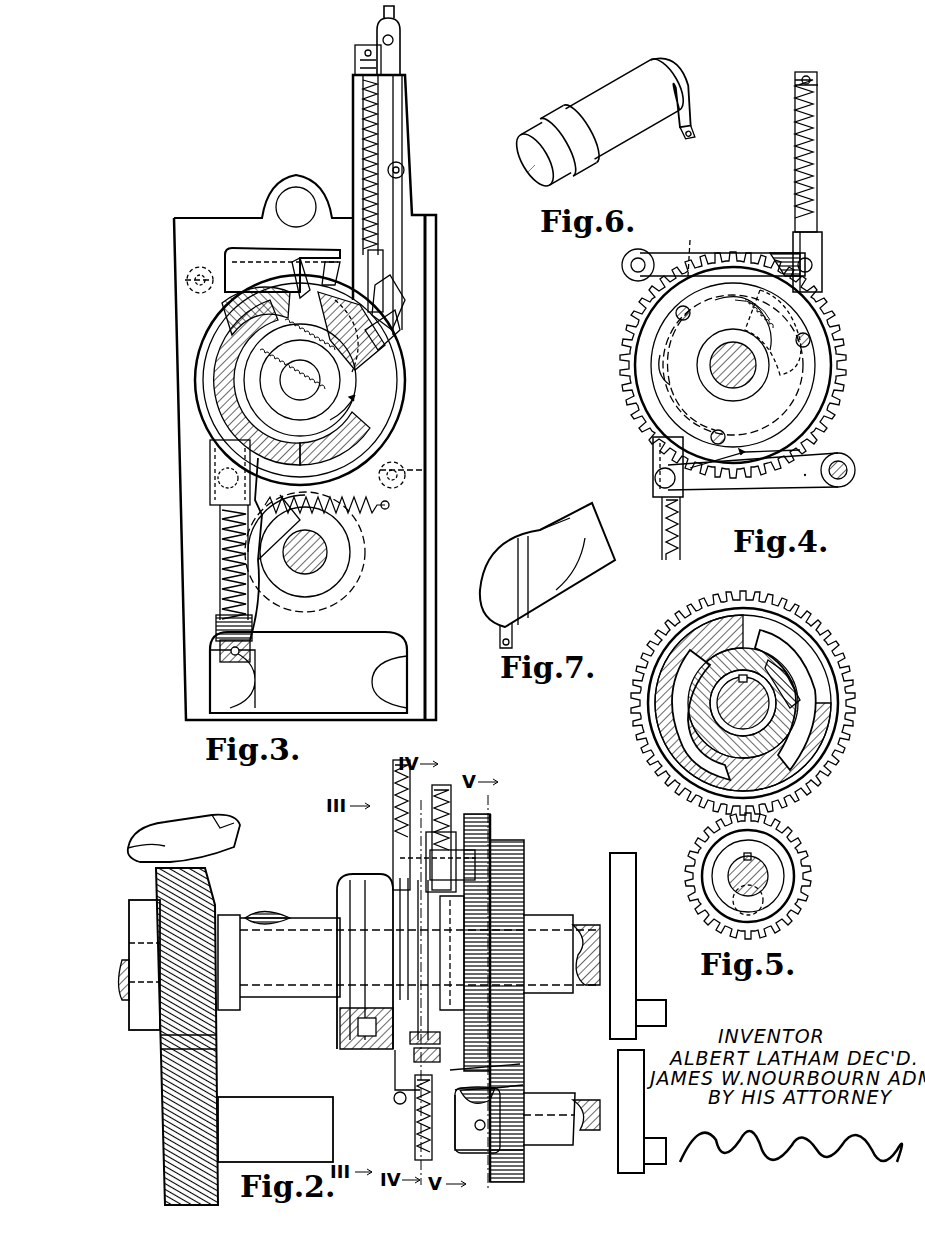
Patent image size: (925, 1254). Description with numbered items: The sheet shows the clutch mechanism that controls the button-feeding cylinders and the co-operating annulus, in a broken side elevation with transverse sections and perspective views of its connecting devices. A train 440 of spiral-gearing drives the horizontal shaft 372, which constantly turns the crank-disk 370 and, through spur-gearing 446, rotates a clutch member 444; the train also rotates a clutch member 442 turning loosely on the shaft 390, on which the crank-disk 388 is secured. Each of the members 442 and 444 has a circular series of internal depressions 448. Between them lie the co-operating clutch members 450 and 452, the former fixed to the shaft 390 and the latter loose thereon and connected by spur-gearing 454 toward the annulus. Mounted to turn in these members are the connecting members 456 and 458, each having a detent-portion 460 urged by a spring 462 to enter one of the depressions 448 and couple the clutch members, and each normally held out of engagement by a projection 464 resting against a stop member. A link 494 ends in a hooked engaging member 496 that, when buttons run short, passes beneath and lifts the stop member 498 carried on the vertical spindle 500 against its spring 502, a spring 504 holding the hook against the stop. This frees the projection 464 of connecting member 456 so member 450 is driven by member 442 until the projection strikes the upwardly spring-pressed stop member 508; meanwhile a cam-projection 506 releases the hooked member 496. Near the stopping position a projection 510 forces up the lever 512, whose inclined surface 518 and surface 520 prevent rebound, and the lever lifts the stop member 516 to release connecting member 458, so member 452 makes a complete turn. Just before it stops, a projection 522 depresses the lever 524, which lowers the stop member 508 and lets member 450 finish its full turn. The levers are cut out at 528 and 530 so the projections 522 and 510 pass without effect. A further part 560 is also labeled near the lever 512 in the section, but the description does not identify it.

In FIG. 2, the crank-disk 370 is at (644, 1102).
In FIG. 3, the horizontal shaft 372 is at (335, 560).
In FIG. 5, the horizontal shaft 372 is at (766, 876).
In FIG. 2, the horizontal shaft 372 is at (545, 1148).
In FIG. 2, the crank-disk 388 is at (636, 900).
In FIG. 5, the shaft 390 is at (700, 725).
In FIG. 2, the shaft 390 is at (580, 920).
In FIG. 2, the train of spiral-gearing 440 is at (218, 1040).
In FIG. 3, the clutch member 442 is at (235, 408).
In FIG. 2, the clutch member 442 is at (337, 890).
In FIG. 5, the clutch member 444 is at (810, 778).
In FIG. 2, the clutch member 444 is at (505, 1000).
In FIG. 5, the spur-gearing 446 is at (775, 818).
In FIG. 2, the spur-gearing 446 is at (523, 1072).
In FIG. 4, the internal depressions 448 is at (665, 362).
In FIG. 5, the internal depressions 448 is at (662, 655).
In FIG. 2, the internal depressions 448 is at (360, 1032).
In FIG. 2, the clutch member 450 is at (370, 1000).
In FIG. 4, the clutch member 452 is at (808, 395).
In FIG. 5, the clutch member 452 is at (790, 740).
In FIG. 2, the clutch member 452 is at (505, 915).
In FIG. 4, the spur-gearing 454 is at (625, 398).
In FIG. 2, the spur-gearing 454 is at (492, 812).
In FIG. 3, the connecting member 456 is at (380, 345).
In FIG. 6, the connecting member 456 is at (600, 98).
In FIG. 4, the connecting member 456 is at (800, 325).
In FIG. 2, the connecting member 456 is at (400, 898).
In FIG. 3, the connecting member 458 is at (330, 262).
In FIG. 7, the connecting member 458 is at (538, 530).
In FIG. 2, the connecting member 458 is at (523, 868).
In FIG. 6, the detent-portion 460 is at (528, 172).
In FIG. 7, the detent-portion 460 is at (605, 532).
In FIG. 5, the detent-portion 460 is at (785, 690).
In FIG. 3, the spring 462 is at (250, 345).
In FIG. 4, the spring 462 is at (720, 305).
In FIG. 3, the projection 464 is at (395, 292).
In FIG. 6, the projection 464 is at (688, 80).
In FIG. 4, the projection 464 is at (810, 278).
In FIG. 7, the projection 464 is at (500, 545).
In FIG. 3, the link 494 is at (395, 22).
In FIG. 3, the hooked engaging member 496 is at (400, 310).
In FIG. 2, the hooked engaging member 496 is at (418, 895).
In FIG. 3, the stop member 498 is at (383, 268).
In FIG. 2, the stop member 498 is at (400, 830).
In FIG. 3, the vertical spindle 500 is at (360, 68).
In FIG. 3, the spring 502 is at (370, 205).
In FIG. 3, the spring 504 is at (313, 552).
In FIG. 2, the spring 504 is at (395, 1097).
In FIG. 3, the cam-projection 506 is at (385, 335).
In FIG. 3, the stop member 508 is at (210, 476).
In FIG. 4, the stop member 508 is at (653, 478).
In FIG. 2, the stop member 508 is at (415, 1078).
In FIG. 3, the projection 510 is at (275, 549).
In FIG. 2, the projection 510 is at (400, 1052).
In FIG. 3, the lever 512 is at (262, 262).
In FIG. 4, the lever 512 is at (730, 253).
In FIG. 2, the lever 512 is at (430, 858).
In FIG. 4, the stop member 516 is at (822, 283).
In FIG. 2, the stop member 516 is at (448, 832).
In FIG. 3, the inclined surface 518 is at (390, 495).
In FIG. 4, the inclined surface 518 is at (653, 453).
In FIG. 4, the surface 520 is at (776, 262).
In FIG. 4, the projection 522 is at (730, 470).
In FIG. 2, the projection 522 is at (495, 1052).
In FIG. 4, the lever 524 is at (815, 490).
In FIG. 2, the lever 524 is at (523, 1086).
In FIG. 4, the cut-out 528 is at (690, 240).
In FIG. 4, the cut-out 530 is at (728, 352).
In FIG. 3, the stud 560 is at (300, 275).